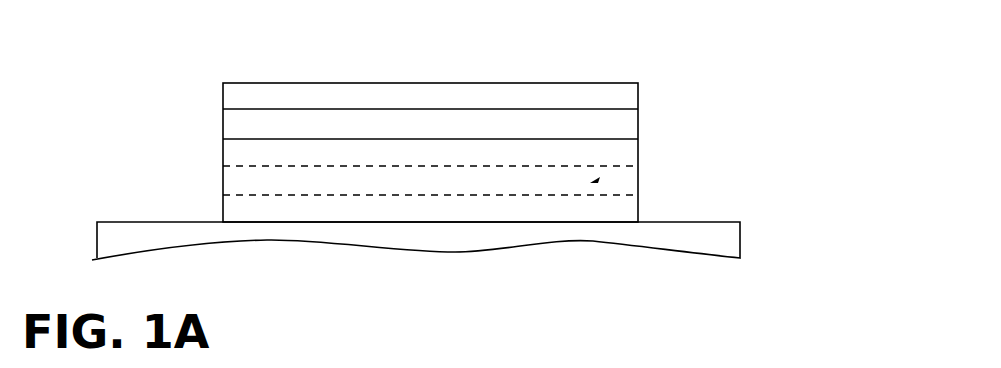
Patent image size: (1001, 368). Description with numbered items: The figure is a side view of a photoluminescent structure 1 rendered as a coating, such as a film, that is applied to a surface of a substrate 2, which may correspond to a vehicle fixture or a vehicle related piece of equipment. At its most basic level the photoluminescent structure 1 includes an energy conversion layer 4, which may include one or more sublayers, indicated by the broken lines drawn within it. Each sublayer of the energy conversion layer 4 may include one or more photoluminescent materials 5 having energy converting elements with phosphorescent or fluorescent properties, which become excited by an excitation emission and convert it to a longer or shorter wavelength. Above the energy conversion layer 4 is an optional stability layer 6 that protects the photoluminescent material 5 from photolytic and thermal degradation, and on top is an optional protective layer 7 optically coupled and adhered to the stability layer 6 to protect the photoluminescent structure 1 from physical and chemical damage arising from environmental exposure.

The photoluminescent structure 1 is at (575, 58).
The substrate 2 is at (683, 220).
The energy conversion layer 4 is at (223, 177).
The photoluminescent material 5 is at (592, 182).
The stability layer 6 is at (223, 125).
The protective layer 7 is at (313, 82).